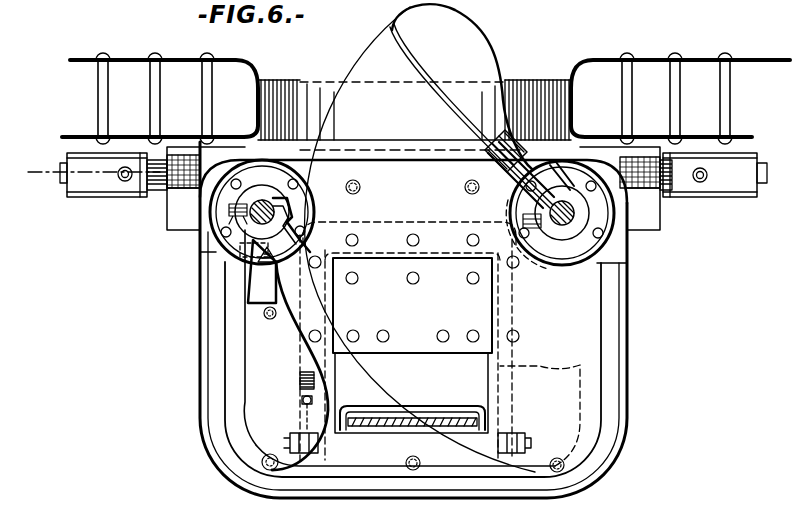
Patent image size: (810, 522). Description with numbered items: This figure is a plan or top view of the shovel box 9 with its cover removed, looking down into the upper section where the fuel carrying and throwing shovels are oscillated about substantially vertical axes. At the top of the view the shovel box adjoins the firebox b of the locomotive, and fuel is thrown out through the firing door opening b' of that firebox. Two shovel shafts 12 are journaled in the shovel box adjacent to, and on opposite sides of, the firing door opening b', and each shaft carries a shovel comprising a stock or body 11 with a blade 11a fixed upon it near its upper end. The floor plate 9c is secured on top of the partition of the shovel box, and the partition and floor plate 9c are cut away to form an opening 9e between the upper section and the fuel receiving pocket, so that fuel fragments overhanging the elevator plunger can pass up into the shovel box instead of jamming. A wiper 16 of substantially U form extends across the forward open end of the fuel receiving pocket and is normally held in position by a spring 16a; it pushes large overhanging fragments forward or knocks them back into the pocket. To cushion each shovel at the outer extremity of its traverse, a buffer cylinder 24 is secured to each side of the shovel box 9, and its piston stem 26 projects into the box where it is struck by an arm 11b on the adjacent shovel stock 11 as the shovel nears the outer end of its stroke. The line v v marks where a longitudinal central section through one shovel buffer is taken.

The shovel box 9 is at (200, 353).
The floor plate 9c is at (580, 296).
The opening 9e is at (465, 374).
The shovel stock 11 is at (262, 246).
The shovel blade 11a is at (401, 238).
The arm 11b is at (296, 241).
The shovel shaft 12 is at (292, 187).
The wiper 16 is at (418, 413).
The spring 16a is at (302, 384).
The buffer cylinder 24 is at (140, 190).
The piston stem 26 is at (240, 172).
The firebox b is at (426, 88).
The firing door opening b' is at (414, 110).
The section line v v is at (273, 160).